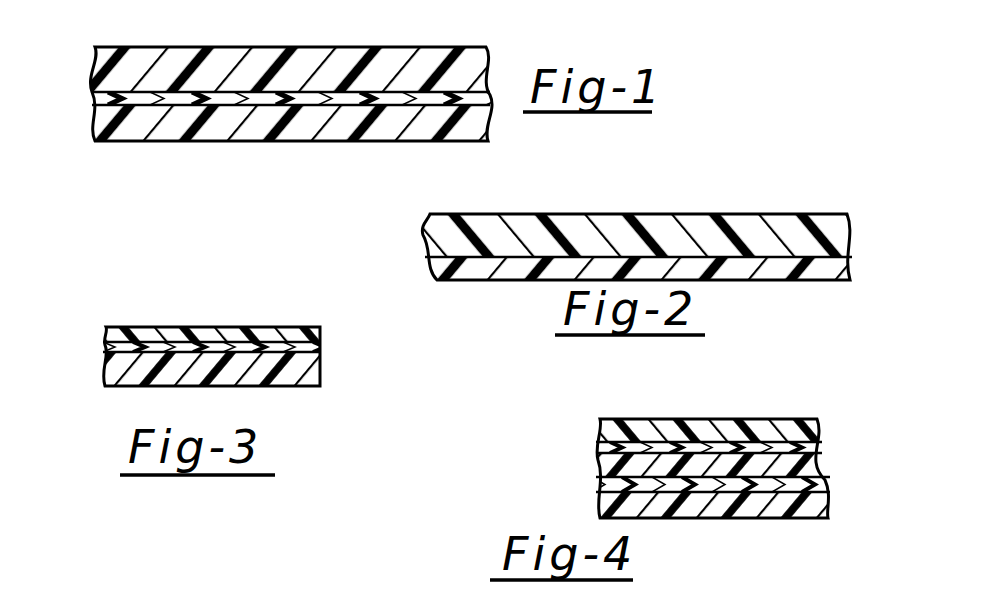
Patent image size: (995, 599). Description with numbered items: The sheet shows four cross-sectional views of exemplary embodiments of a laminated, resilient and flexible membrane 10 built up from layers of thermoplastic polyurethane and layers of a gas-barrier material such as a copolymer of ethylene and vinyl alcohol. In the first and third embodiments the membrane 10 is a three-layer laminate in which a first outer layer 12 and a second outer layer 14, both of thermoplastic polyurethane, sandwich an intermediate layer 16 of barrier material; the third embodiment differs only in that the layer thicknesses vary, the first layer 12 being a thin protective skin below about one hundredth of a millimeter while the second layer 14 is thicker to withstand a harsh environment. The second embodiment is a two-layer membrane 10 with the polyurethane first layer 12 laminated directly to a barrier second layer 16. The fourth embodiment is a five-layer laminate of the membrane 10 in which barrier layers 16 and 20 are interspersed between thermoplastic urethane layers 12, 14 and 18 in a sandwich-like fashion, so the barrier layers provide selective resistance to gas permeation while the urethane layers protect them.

In FIG. 1, the laminated membrane 10 is at (344, 98).
In FIG. 2, the laminated membrane 10 is at (640, 216).
In FIG. 3, the laminated membrane 10 is at (232, 324).
In FIG. 4, the laminated membrane 10 is at (734, 452).
In FIG. 1, the first outer layer 12 is at (245, 74).
In FIG. 2, the first outer layer 12 is at (524, 222).
In FIG. 3, the first outer layer 12 is at (236, 335).
In FIG. 4, the first outer layer 12 is at (645, 425).
In FIG. 1, the second outer layer 14 is at (418, 122).
In FIG. 3, the second outer layer 14 is at (258, 375).
In FIG. 4, the second outer layer 14 is at (757, 452).
In FIG. 1, the intermediate layer 16 is at (314, 97).
In FIG. 2, the intermediate layer 16 is at (516, 263).
In FIG. 3, the intermediate layer 16 is at (266, 348).
In FIG. 4, the intermediate layer 16 is at (700, 440).
In FIG. 4, the thermoplastic urethane layer 18 is at (698, 513).
In FIG. 4, the barrier material layer 20 is at (771, 500).